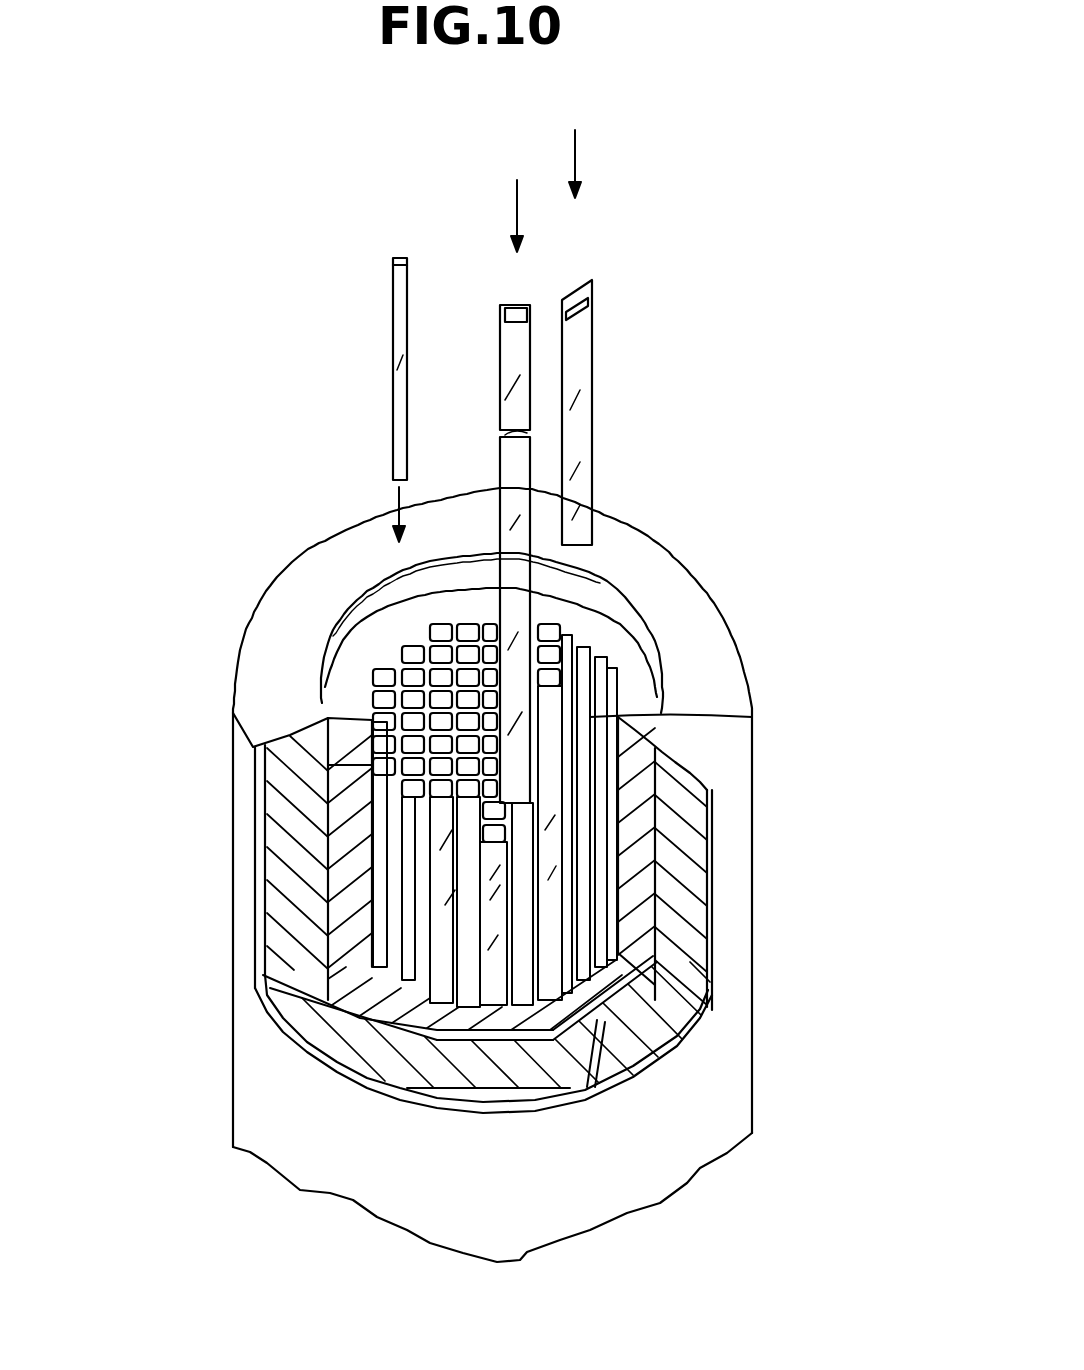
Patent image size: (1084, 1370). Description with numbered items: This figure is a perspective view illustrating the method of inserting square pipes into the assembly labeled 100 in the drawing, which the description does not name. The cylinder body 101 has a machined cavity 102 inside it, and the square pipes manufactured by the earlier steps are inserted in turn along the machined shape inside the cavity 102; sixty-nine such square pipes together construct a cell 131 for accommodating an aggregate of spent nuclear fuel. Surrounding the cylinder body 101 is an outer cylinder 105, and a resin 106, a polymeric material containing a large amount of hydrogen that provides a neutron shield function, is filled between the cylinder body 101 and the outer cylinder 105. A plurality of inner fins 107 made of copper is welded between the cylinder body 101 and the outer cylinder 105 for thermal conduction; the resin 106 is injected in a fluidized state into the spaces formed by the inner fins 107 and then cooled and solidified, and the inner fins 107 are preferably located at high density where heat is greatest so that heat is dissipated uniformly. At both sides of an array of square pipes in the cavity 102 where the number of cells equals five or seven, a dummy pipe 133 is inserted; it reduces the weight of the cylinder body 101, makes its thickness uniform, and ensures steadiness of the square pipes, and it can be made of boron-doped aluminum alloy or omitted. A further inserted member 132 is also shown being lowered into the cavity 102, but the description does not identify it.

The battery 100 is at (199, 399).
The cylinder body 101 is at (560, 1050).
The cavity 102 is at (613, 677).
The outer cylinder 105 is at (740, 925).
The resin 106 is at (657, 1060).
The inner fins 107 is at (513, 1092).
The cell 131 is at (387, 655).
The electrode lead 132 is at (523, 466).
The dummy pipe 133 is at (401, 364).